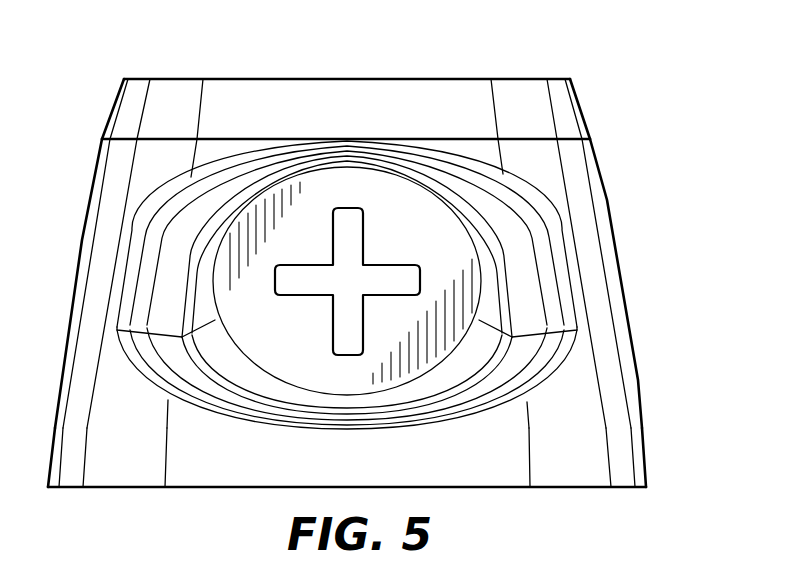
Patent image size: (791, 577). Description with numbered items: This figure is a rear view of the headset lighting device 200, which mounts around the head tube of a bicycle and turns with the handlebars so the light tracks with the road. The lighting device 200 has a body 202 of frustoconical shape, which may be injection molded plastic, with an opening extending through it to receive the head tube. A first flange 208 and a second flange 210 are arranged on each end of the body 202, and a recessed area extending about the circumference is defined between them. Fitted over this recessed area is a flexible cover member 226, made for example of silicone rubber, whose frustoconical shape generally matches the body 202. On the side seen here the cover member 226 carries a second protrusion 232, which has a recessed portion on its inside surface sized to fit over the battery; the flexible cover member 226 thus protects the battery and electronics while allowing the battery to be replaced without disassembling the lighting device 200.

The lighting device 200 is at (384, 274).
The body 202 is at (559, 487).
The first flange 208 is at (582, 108).
The second flange 210 is at (637, 453).
The cover member 226 is at (586, 186).
The second protrusion 232 is at (523, 267).